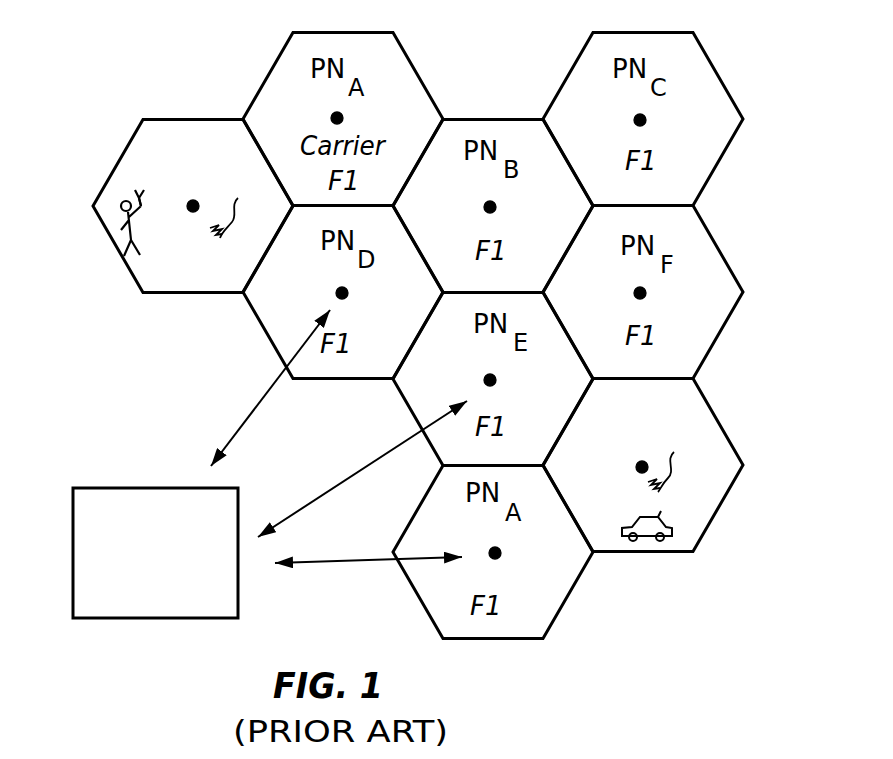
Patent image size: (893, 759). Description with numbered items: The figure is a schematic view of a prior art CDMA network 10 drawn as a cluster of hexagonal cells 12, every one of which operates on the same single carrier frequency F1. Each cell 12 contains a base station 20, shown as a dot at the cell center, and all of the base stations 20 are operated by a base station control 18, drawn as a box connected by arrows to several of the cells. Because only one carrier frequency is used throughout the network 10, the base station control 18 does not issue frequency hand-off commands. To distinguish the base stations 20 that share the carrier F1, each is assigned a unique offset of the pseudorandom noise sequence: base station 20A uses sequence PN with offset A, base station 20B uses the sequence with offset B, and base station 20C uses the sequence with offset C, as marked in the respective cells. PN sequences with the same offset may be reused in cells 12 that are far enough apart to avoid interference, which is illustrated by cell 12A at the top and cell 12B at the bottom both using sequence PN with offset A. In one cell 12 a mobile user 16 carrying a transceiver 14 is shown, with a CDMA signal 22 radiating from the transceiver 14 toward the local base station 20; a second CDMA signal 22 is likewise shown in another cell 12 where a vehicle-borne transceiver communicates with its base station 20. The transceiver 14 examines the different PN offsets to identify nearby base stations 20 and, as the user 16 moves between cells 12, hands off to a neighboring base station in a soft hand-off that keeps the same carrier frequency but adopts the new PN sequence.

The CDMA network 10 is at (493, 47).
The cell 12 is at (118, 160).
The cell 12A is at (267, 76).
The cell 12B is at (576, 589).
The transceiver 14 is at (140, 203).
The mobile user 16 is at (137, 254).
The base station control 18 is at (97, 488).
The base station 20 is at (193, 203).
The base station 20A is at (343, 119).
The base station 20B is at (496, 208).
The base station 20C is at (646, 120).
The CDMA signal 22 is at (450, 336).